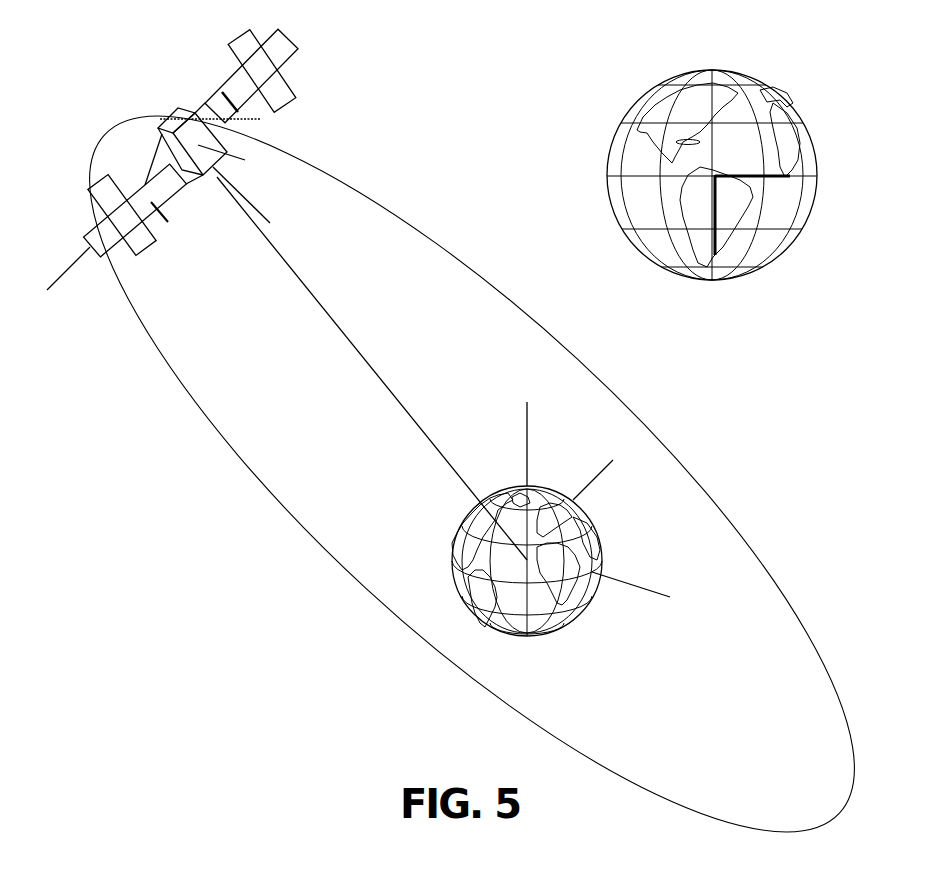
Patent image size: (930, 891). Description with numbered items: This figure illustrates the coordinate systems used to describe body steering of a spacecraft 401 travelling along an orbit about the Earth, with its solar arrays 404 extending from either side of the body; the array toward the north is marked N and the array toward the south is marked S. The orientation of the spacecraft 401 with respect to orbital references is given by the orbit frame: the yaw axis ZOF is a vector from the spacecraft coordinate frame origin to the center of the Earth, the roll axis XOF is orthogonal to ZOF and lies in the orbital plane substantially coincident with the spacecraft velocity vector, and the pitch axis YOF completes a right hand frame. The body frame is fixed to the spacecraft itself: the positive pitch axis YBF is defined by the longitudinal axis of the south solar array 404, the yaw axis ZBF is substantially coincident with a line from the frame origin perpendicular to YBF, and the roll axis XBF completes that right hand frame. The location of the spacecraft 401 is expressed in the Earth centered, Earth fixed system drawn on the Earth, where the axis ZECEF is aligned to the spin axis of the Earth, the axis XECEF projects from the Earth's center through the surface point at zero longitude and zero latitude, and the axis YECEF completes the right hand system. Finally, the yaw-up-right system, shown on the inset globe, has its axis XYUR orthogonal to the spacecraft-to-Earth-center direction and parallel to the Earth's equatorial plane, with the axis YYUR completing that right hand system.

The spacecraft 401 is at (130, 92).
The solar array 404 is at (293, 52).
The north solar panel N is at (251, 76).
The south solar panel S is at (135, 210).
The orbit frame roll axis XOF is at (224, 126).
The orbit frame pitch axis YOF is at (150, 175).
The orbit frame yaw axis ZOF is at (365, 368).
The body frame roll axis XBF is at (236, 159).
The body frame pitch axis YBF is at (59, 278).
The body frame yaw axis ZBF is at (257, 203).
The ECEF X axis XECEF is at (655, 592).
The ECEF Y axis YECEF is at (618, 476).
The ECEF Z axis ZECEF is at (543, 430).
The YUR X axis XYUR is at (756, 192).
The YUR Y axis YYUR is at (738, 219).